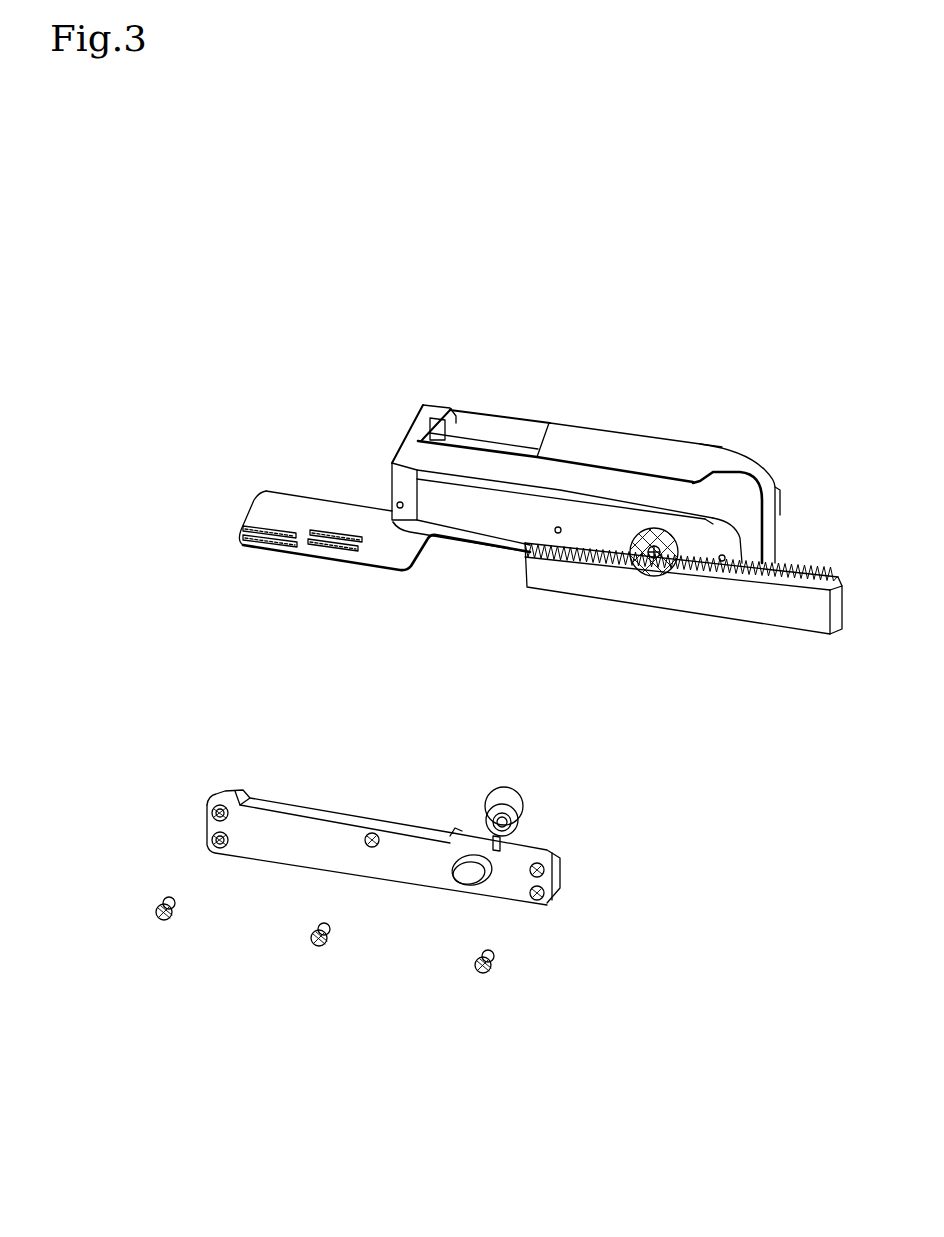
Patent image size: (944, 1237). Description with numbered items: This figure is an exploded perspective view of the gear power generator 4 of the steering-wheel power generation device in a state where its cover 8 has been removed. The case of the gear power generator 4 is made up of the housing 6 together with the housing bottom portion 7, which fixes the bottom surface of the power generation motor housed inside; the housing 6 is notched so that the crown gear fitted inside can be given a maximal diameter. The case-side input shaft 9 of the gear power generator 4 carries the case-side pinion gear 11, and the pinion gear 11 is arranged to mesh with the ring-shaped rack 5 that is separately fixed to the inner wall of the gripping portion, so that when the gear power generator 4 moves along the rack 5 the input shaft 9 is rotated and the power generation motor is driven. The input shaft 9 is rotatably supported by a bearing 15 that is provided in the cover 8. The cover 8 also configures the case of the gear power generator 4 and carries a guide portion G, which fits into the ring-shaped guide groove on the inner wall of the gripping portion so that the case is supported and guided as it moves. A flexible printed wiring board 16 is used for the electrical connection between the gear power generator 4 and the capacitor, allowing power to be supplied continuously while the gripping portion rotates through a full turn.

The gear power generator 4 is at (488, 400).
The ring-shaped rack 5 is at (565, 575).
The housing 6 is at (558, 480).
The housing bottom portion 7 is at (421, 455).
The cover 8 is at (213, 851).
The case-side input shaft 9 is at (655, 535).
The case-side pinion gear 11 is at (675, 555).
The bearing 15 is at (527, 820).
The flexible printed wiring board 16 is at (302, 513).
The guide portion G is at (244, 800).